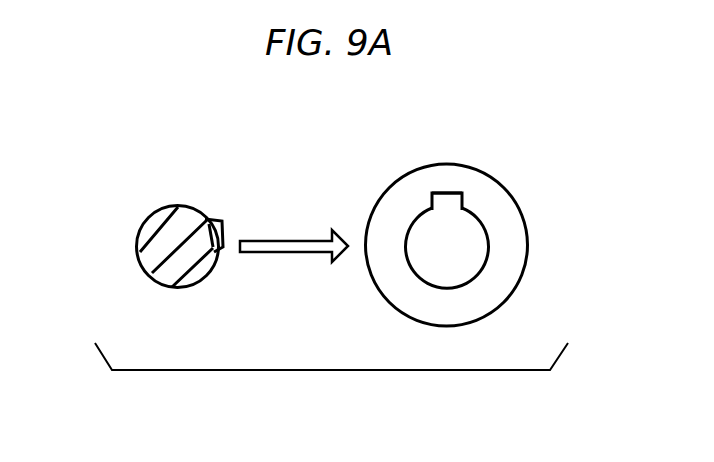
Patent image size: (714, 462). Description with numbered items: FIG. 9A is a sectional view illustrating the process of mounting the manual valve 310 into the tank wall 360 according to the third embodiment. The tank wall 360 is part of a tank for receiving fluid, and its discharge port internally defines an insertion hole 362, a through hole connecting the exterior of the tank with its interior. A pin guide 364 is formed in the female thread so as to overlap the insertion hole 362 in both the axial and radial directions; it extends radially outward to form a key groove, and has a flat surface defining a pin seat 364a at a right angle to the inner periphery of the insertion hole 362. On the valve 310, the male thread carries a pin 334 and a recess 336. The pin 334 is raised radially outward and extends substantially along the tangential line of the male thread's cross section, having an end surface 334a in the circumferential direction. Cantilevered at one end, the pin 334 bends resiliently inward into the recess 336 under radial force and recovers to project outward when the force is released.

The valve 310 is at (253, 147).
The pin 334 is at (215, 232).
The end surface 334a is at (221, 222).
The recess 336 is at (198, 262).
The tank wall 360 is at (457, 152).
The insertion hole 362 is at (447, 245).
The pin guide 364 is at (452, 202).
The pin seat 364a is at (437, 195).